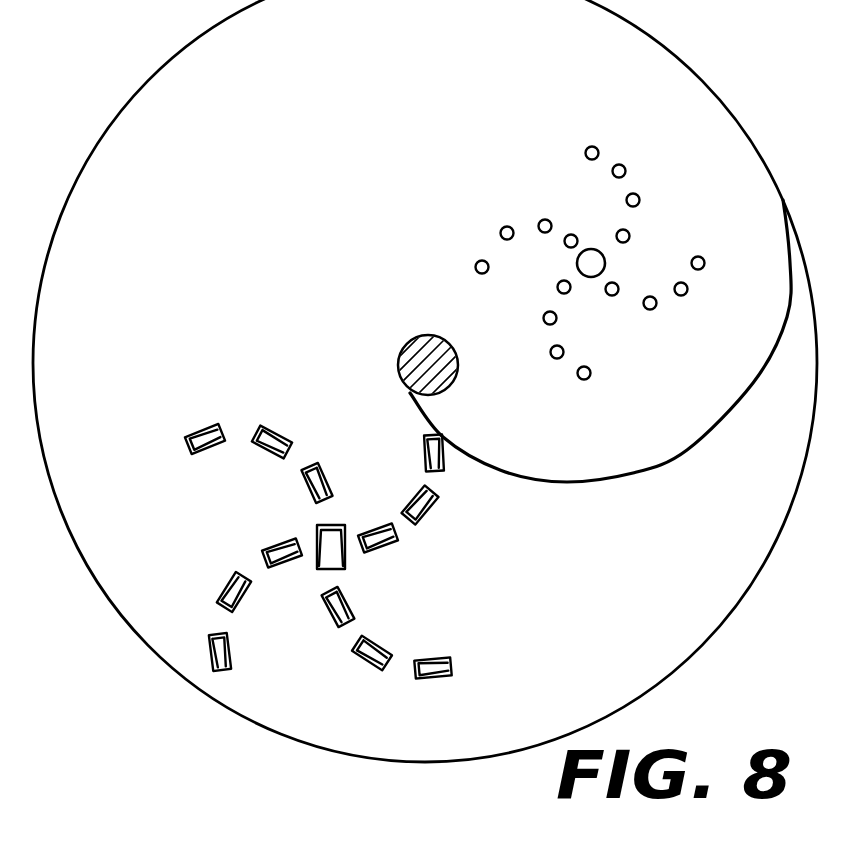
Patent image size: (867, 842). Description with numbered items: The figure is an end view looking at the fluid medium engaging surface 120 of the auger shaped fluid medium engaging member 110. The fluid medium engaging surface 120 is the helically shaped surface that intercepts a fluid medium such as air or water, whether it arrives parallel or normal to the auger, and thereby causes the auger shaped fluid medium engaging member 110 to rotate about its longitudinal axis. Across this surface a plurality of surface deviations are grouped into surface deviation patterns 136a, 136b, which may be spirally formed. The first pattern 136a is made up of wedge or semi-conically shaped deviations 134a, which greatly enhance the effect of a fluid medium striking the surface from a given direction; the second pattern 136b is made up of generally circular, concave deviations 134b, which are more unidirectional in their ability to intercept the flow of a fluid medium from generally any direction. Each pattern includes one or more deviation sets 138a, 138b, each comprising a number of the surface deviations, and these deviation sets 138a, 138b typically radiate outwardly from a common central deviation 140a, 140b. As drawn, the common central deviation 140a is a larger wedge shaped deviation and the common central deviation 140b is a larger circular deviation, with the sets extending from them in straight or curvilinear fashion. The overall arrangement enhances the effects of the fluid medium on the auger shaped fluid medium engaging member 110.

The auger shaped fluid medium engaging member 110 is at (92, 124).
The fluid medium engaging surface 120 is at (224, 224).
The surface deviation pattern 136a is at (338, 551).
The surface deviation pattern 136b is at (607, 263).
The deviation set 138a is at (291, 495).
The deviation set 138b is at (655, 194).
The common central deviation 140a is at (316, 537).
The common central deviation 140b is at (577, 261).
The wedge or semi-conically shaped deviation 134a is at (434, 472).
The generally circular, concave deviation 134b is at (645, 304).